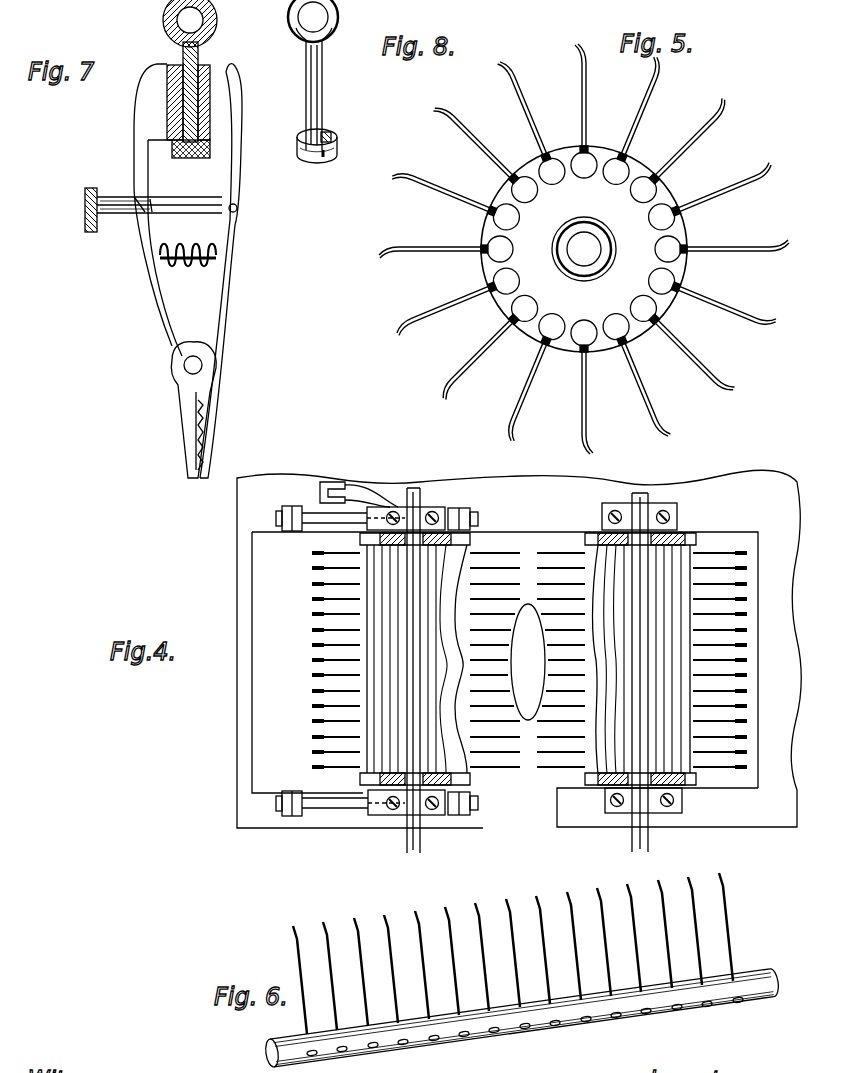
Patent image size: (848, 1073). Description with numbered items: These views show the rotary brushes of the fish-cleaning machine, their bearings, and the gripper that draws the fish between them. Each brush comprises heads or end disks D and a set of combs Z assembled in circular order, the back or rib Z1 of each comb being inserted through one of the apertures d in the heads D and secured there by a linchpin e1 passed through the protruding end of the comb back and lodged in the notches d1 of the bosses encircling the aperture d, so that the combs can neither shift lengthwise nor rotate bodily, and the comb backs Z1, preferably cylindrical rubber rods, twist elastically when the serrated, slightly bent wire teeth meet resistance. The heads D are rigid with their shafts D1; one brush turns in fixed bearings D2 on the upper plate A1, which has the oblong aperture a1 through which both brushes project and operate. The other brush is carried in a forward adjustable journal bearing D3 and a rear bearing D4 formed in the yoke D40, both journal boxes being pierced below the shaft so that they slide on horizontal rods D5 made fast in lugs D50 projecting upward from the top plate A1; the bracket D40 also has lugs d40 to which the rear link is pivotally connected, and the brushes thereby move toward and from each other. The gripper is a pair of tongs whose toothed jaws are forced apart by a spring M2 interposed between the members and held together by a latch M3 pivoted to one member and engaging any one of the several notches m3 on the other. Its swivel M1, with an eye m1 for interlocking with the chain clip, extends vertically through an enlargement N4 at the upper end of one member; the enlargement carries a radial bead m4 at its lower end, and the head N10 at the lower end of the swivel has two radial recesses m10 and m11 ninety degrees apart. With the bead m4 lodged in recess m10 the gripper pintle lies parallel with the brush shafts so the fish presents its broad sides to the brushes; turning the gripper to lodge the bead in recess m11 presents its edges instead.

In FIG. 7, the eye m1 is at (177, 20).
In FIG. 8, the eye m1 is at (322, 17).
In FIG. 7, the swivel M1 is at (199, 55).
In FIG. 8, the swivel M1 is at (323, 78).
In FIG. 7, the enlargement N4 is at (207, 99).
In FIG. 7, the projection or bead m4 is at (208, 147).
In FIG. 7, the head N10 is at (186, 152).
In FIG. 8, the head N10 is at (303, 160).
In FIG. 7, the latch M3 is at (130, 204).
In FIG. 7, the notches m3 is at (140, 222).
In FIG. 7, the spring M2 is at (180, 262).
In FIG. 8, the radial recess m10 is at (332, 137).
In FIG. 8, the radial recess m11 is at (325, 157).
In FIG. 5, the apertures d is at (645, 182).
In FIG. 4, the apertures d is at (472, 790).
In FIG. 5, the notches d1 is at (685, 238).
In FIG. 5, the linchpin e1 is at (686, 247).
In FIG. 4, the linchpin e1 is at (698, 540).
In FIG. 5, the heads or end disks D is at (591, 249).
In FIG. 4, the heads or end disks D is at (440, 515).
In FIG. 5, the comb back or rib Z1 is at (652, 187).
In FIG. 4, the comb back or rib Z1 is at (312, 703).
In FIG. 6, the comb back or rib Z1 is at (568, 1016).
In FIG. 6, the combs Z is at (513, 953).
In FIG. 4, the upper plate A1 is at (519, 649).
In FIG. 4, the oblong aperture a1 is at (505, 662).
In FIG. 4, the shafts D1 is at (415, 490).
In FIG. 4, the bearings D2 is at (660, 510).
In FIG. 4, the adjustable journal bearing D3 is at (400, 815).
In FIG. 4, the bearing D4 is at (438, 540).
In FIG. 4, the horizontal rods D5 is at (318, 512).
In FIG. 4, the yoke or bracket D40 is at (372, 492).
In FIG. 4, the lugs D50 is at (292, 513).
In FIG. 4, the lugs d40 is at (332, 482).